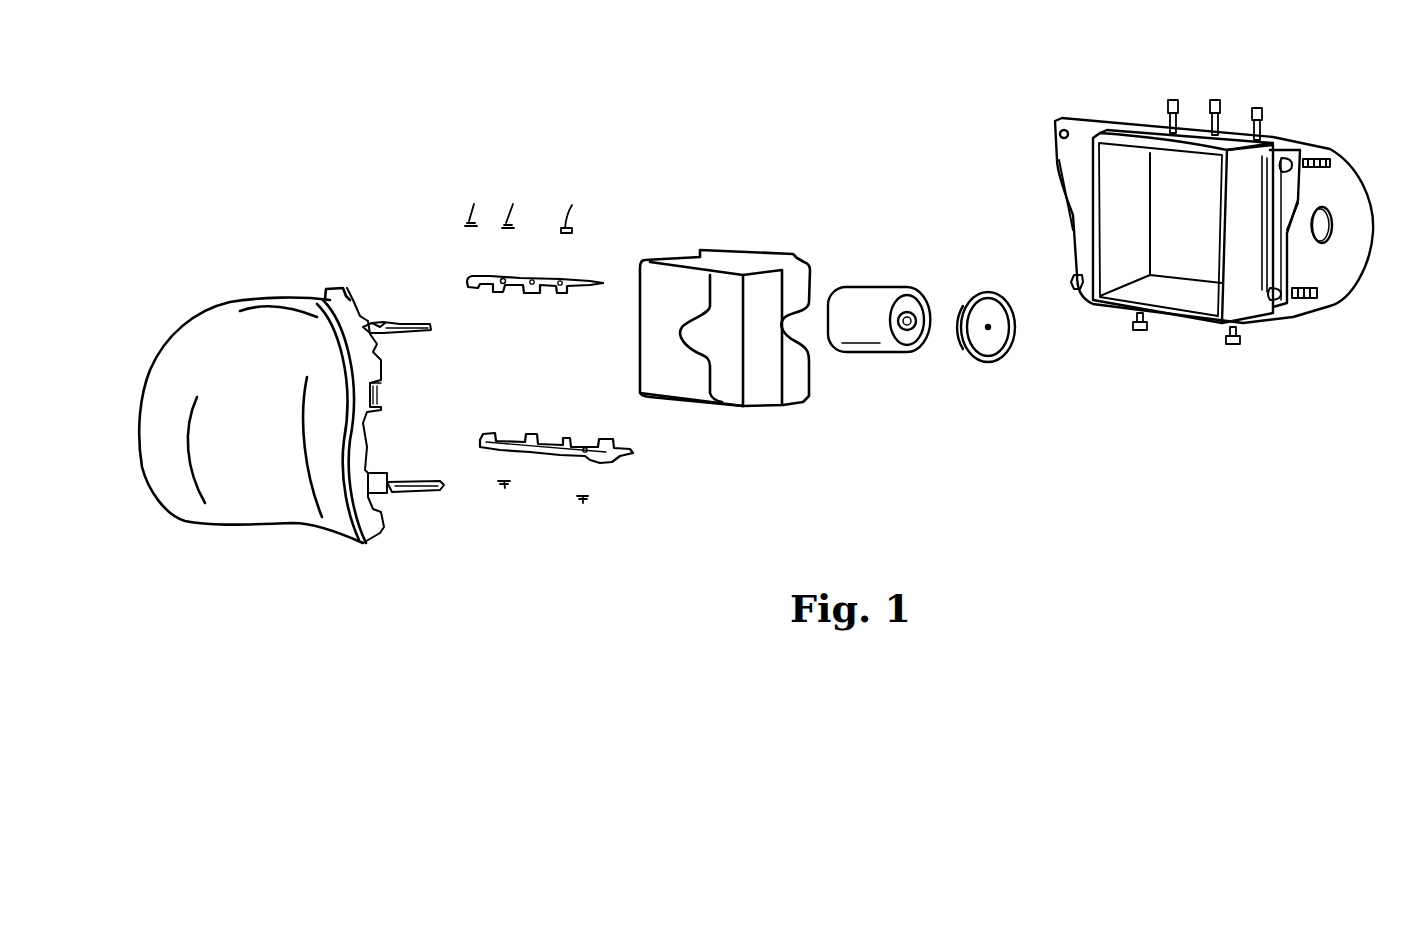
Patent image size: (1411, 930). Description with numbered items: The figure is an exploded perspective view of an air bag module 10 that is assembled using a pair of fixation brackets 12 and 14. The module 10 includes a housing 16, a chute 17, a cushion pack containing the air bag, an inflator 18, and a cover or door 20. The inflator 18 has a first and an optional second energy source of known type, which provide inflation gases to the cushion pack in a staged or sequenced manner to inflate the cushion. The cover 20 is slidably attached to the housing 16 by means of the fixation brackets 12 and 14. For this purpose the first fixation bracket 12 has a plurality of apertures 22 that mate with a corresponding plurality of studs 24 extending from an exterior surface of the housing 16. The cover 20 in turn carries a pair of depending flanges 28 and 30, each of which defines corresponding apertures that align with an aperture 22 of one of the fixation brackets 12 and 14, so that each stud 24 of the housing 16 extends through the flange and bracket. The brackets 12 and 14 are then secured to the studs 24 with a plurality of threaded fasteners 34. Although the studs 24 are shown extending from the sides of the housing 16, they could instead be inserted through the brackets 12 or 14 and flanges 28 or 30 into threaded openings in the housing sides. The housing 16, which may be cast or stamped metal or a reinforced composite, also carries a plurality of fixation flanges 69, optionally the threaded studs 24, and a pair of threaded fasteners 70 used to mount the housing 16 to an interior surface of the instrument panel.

The module 10 is at (853, 110).
The first fixation bracket 12 is at (572, 281).
The fixation bracket 14 is at (612, 459).
The housing 16 is at (1306, 153).
The chute 17 is at (758, 394).
The inflator 18 is at (872, 338).
The cover 20 is at (290, 513).
The apertures 22 is at (505, 280).
The studs 24 is at (1178, 102).
The depending flange 28 is at (414, 323).
The depending flange 30 is at (418, 495).
The threaded fasteners 34 is at (609, 531).
The fixation flanges 69 is at (1073, 186).
The threaded fasteners 70 is at (1078, 284).